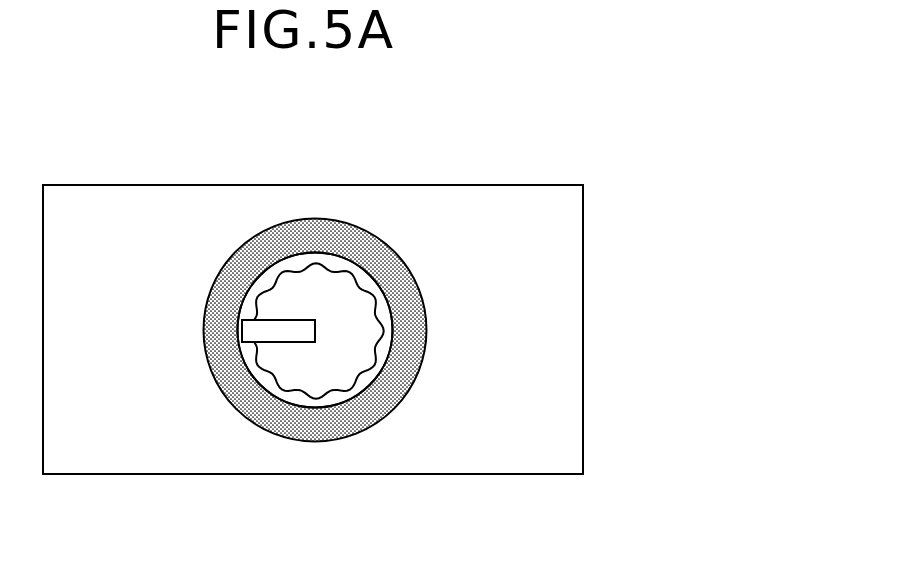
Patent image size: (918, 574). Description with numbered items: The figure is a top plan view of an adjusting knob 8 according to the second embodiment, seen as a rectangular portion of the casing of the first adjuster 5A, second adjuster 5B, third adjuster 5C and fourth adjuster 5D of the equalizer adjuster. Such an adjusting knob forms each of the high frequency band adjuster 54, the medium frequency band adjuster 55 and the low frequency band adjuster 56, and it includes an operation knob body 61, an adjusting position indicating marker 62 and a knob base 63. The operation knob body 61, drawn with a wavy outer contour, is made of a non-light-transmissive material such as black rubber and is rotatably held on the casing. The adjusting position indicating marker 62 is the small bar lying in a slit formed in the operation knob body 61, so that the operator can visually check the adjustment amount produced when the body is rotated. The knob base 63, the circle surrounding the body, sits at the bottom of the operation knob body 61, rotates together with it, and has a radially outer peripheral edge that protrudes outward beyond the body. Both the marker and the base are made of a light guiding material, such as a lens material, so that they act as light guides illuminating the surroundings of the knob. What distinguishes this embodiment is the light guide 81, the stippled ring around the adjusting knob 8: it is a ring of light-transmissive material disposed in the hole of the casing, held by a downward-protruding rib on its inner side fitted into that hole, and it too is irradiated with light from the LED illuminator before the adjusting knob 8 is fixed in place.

The first adjuster 5A is at (413, 329).
The second adjuster 5B is at (413, 329).
The third adjuster 5C is at (413, 329).
The fourth adjuster 5D is at (542, 313).
The adjusting knob 8 is at (353, 339).
The high frequency band adjuster 54 is at (353, 339).
The medium frequency band adjuster 55 is at (353, 339).
The low frequency band adjuster 56 is at (353, 339).
The operation knob body 61 is at (302, 295).
The adjusting position indicating marker 62 is at (272, 327).
The knob base 63 is at (332, 398).
The light guide 81 is at (292, 422).